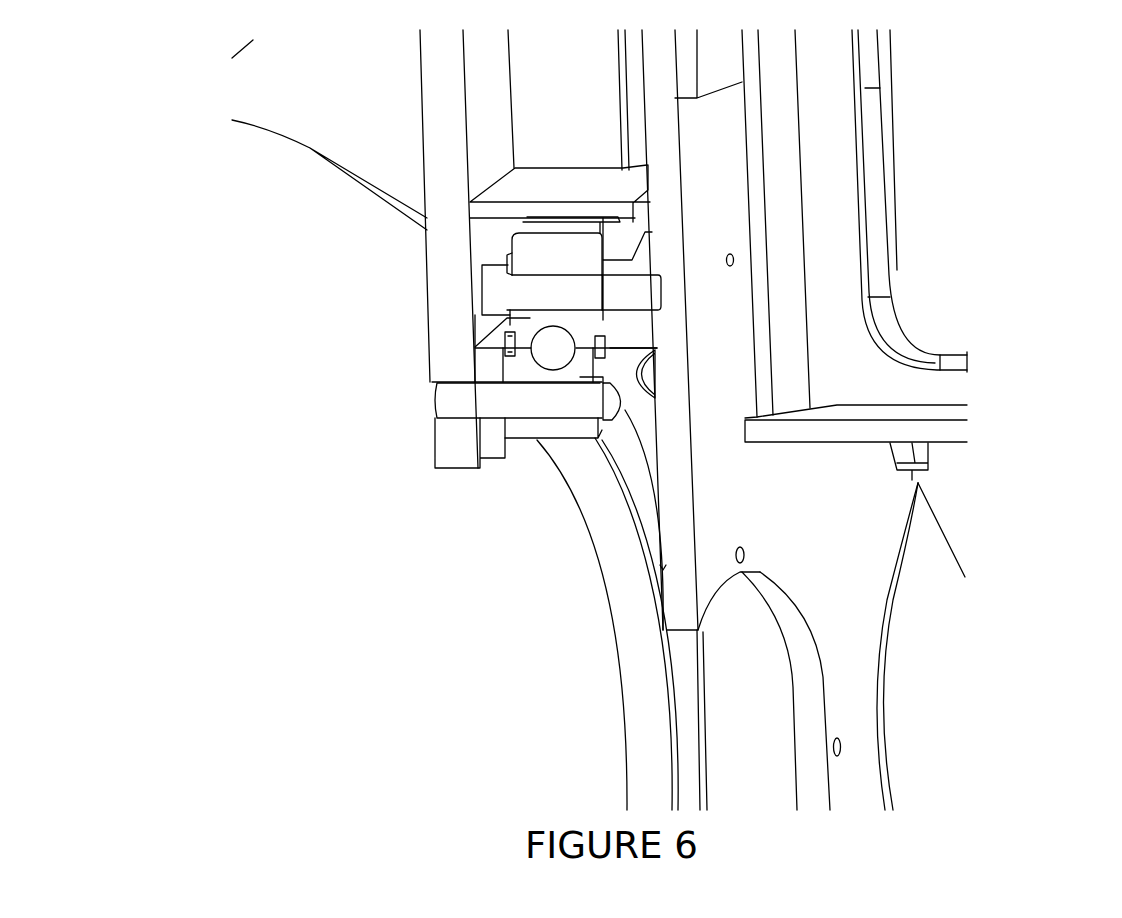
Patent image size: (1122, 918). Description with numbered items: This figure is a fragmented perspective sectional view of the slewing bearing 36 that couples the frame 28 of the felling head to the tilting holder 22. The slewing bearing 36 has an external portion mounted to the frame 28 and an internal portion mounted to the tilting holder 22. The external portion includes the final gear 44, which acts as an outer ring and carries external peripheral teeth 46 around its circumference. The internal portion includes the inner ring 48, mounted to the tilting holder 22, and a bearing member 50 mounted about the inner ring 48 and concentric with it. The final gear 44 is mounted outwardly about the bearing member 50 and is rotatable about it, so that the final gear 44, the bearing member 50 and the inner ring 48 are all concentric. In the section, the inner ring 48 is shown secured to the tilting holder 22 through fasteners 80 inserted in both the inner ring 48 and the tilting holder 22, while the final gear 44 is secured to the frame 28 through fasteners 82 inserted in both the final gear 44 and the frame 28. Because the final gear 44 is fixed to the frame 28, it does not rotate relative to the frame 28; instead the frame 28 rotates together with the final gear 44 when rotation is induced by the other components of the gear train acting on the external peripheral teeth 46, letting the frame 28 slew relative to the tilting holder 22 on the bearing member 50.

The tilting holder 22 is at (447, 197).
The frame 28 is at (818, 242).
The external peripheral teeth 46 is at (565, 240).
The fasteners 82 is at (543, 284).
The final gear 44 is at (530, 318).
The bearing member 50 is at (539, 358).
The fasteners 80 is at (542, 403).
The inner ring 48 is at (542, 428).
The slewing bearing 36 is at (375, 426).